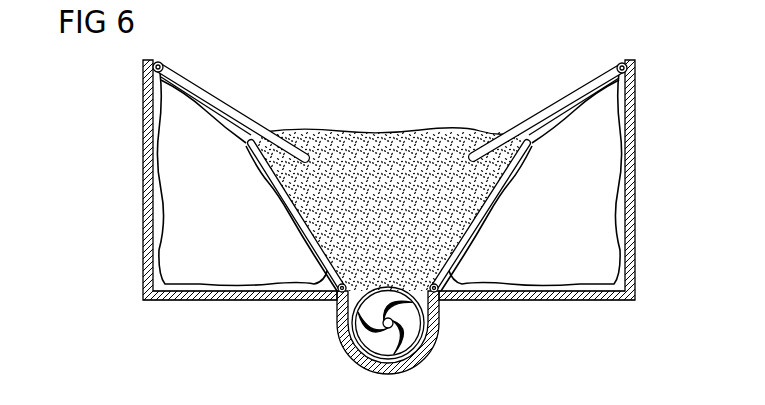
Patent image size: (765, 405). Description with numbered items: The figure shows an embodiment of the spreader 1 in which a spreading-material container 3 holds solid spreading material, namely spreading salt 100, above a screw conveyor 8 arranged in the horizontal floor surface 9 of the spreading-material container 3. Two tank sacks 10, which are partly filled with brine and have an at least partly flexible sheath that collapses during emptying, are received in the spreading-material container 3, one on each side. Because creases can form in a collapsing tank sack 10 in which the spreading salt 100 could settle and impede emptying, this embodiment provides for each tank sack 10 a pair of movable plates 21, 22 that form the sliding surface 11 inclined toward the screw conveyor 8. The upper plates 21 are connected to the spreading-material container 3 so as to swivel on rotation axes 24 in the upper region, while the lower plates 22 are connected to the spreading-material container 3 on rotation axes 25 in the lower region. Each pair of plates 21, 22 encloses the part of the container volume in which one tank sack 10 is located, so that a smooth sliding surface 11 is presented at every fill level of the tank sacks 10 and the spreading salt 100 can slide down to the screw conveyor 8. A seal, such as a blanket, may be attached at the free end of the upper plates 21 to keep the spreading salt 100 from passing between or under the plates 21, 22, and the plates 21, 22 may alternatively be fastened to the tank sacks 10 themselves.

The spreader 1 is at (105, 108).
The spreading-material container 3 is at (147, 240).
The screw conveyor 8 is at (408, 343).
The horizontal floor surface 9 is at (235, 298).
The tank sack 10 is at (167, 193).
The sliding surface 11 is at (252, 115).
The upper plate 21 is at (227, 115).
The lower plate 22 is at (302, 225).
The rotation axis 24 is at (163, 63).
The rotation axis 25 is at (336, 296).
The spreading salt 100 is at (398, 142).